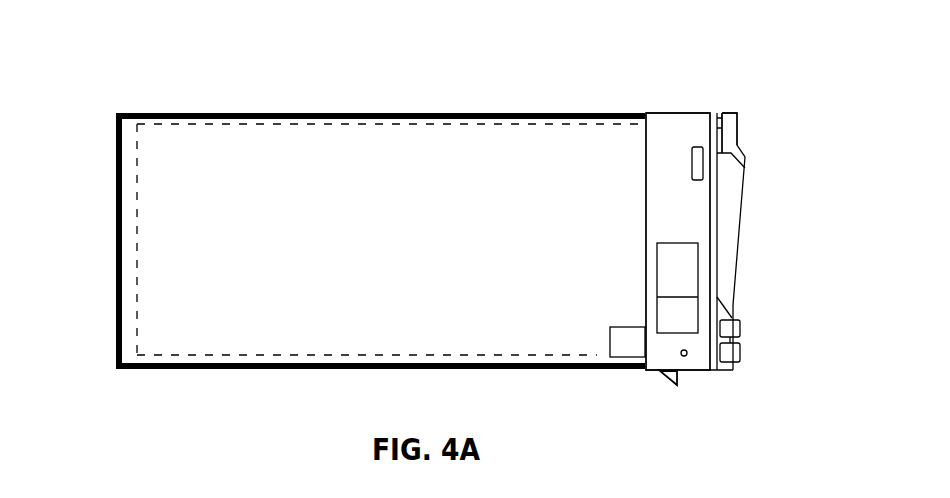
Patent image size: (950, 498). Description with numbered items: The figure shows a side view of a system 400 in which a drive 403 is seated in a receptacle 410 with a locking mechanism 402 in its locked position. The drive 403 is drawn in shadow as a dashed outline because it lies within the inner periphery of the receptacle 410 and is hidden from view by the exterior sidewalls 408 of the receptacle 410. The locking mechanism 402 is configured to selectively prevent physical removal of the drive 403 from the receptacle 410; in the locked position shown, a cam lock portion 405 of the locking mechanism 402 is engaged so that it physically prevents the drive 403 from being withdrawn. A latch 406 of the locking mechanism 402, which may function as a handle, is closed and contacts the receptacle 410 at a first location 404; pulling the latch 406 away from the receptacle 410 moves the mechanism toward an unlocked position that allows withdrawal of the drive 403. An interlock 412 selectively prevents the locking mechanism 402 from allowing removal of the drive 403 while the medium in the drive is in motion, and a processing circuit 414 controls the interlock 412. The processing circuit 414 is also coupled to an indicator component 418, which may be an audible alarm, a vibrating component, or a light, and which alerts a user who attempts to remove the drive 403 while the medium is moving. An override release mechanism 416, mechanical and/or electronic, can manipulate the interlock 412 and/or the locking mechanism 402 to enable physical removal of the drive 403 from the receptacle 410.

The system 400 is at (78, 80).
The locking mechanism 402 is at (703, 385).
The drive 403 is at (407, 113).
The first location 404 is at (721, 111).
The cam lock portion 405 is at (669, 383).
The latch 406 is at (736, 236).
The exterior sidewalls 408 is at (313, 113).
The receptacle 410 is at (533, 89).
The interlock 412 is at (677, 288).
The processing circuit 414 is at (621, 357).
The override release mechanism 416 is at (742, 328).
The indicator component 418 is at (742, 352).